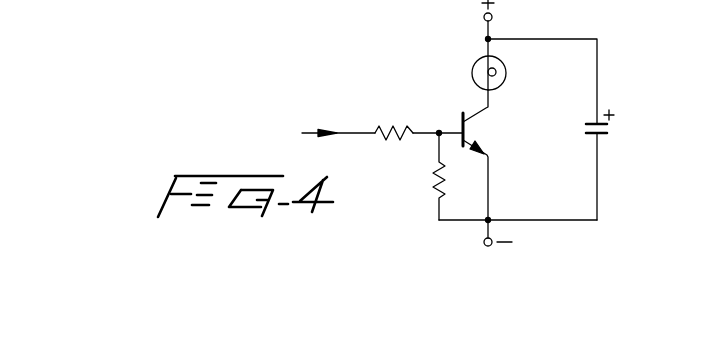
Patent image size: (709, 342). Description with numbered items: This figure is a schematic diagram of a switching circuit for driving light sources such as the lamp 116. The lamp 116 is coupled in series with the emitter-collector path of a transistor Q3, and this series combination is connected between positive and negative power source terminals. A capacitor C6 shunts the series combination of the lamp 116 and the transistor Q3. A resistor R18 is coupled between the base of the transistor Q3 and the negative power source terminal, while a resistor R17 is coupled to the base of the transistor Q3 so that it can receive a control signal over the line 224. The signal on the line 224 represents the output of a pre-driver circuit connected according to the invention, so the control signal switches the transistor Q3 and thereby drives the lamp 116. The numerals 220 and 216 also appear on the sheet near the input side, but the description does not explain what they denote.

The signal line 220 is at (104, 8).
The signal line 216 is at (324, 15).
The line 224 is at (335, 132).
The resistor R17 is at (390, 125).
The resistor R18 is at (430, 170).
The transistor Q3 is at (477, 133).
The lamp 116 is at (472, 71).
The capacitor C6 is at (600, 135).